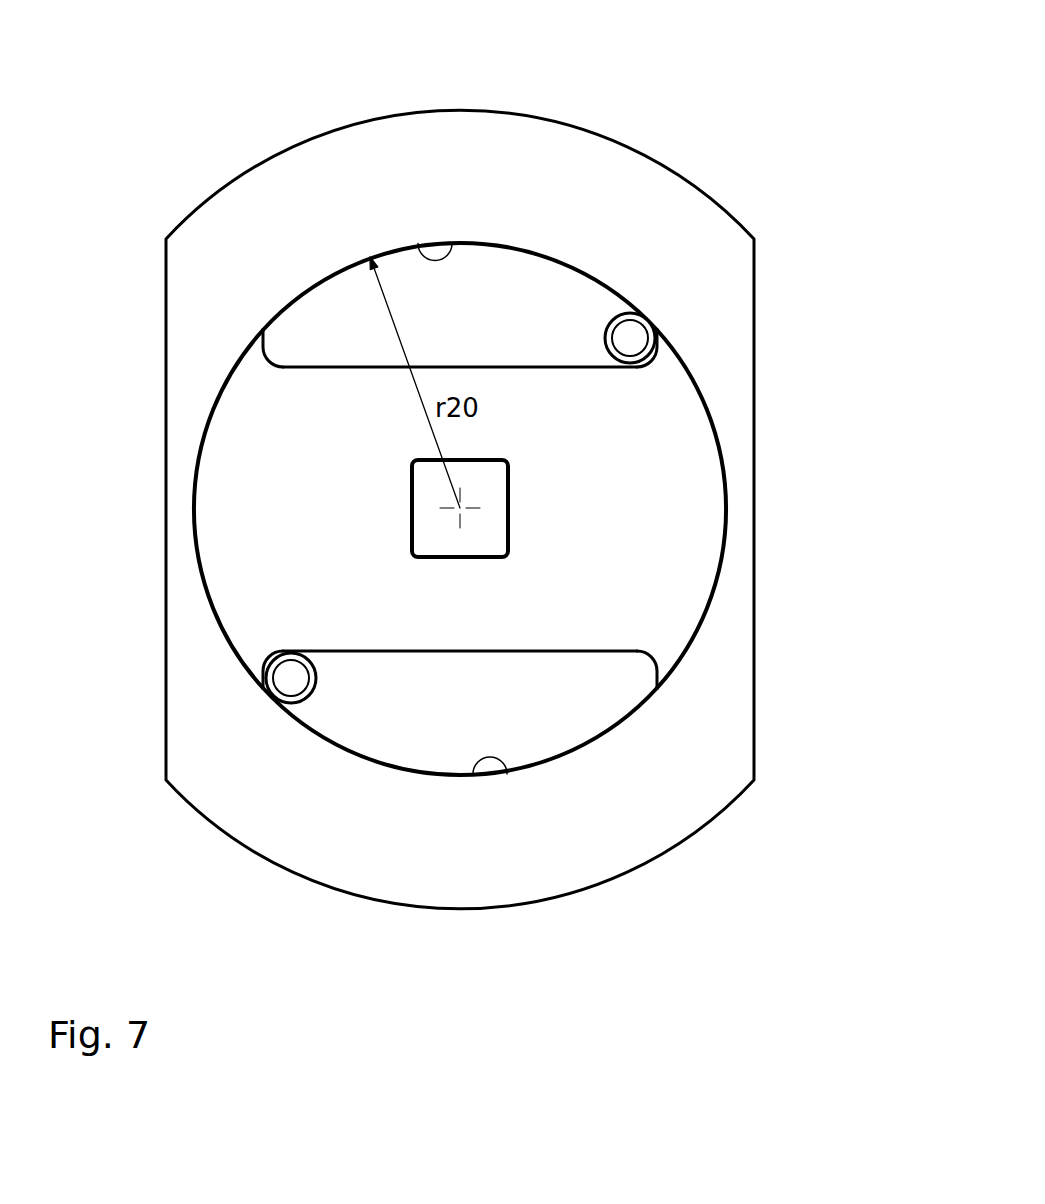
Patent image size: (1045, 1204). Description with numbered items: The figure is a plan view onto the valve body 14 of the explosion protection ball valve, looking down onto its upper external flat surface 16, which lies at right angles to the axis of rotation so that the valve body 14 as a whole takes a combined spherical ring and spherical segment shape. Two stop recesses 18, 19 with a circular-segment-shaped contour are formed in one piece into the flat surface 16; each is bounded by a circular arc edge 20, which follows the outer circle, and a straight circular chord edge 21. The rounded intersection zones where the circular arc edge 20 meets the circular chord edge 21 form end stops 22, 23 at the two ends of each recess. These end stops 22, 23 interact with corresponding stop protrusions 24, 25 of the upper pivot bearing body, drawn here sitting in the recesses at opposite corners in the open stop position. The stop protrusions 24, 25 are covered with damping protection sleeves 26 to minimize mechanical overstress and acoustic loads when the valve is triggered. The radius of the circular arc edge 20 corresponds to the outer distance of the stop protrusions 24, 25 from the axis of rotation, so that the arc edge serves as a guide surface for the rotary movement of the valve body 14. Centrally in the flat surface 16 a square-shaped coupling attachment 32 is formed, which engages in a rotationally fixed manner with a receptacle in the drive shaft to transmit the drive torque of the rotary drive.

The valve body 14 is at (374, 102).
The external flat surface 16 is at (668, 481).
The stop recess 18 is at (515, 303).
The stop recess 19 is at (528, 745).
The circular arc edge 20 is at (455, 243).
The circular chord edge 21 is at (470, 360).
The end stop 22 is at (633, 340).
The end stop 23 is at (268, 345).
The stop protrusion 24 is at (638, 310).
The stop protrusion 25 is at (274, 695).
The damping protection sleeve 26 is at (603, 388).
The coupling attachment 32 is at (493, 500).